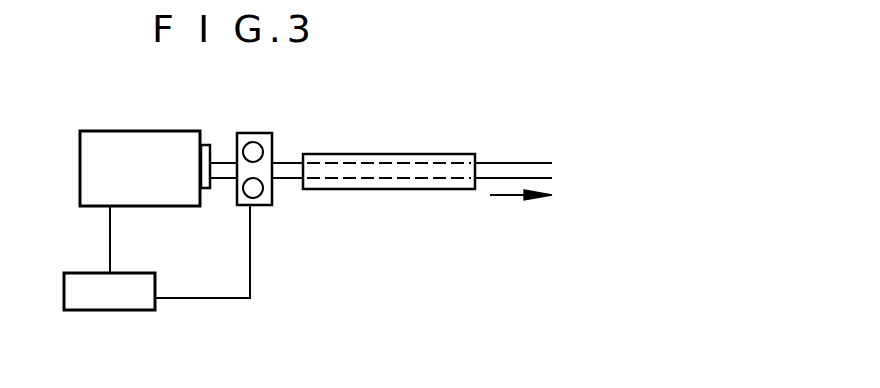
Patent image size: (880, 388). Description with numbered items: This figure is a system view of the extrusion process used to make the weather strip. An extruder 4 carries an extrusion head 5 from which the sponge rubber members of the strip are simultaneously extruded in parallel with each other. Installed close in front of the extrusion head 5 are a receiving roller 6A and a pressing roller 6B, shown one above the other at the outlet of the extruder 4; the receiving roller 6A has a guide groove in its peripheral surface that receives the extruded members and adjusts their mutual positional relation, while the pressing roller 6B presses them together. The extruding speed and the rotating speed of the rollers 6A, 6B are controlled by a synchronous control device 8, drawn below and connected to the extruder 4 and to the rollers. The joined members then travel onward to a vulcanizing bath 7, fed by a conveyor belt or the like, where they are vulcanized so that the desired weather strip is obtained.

The extruder 4 is at (143, 141).
The extrusion head 5 is at (207, 142).
The receiving roller 6A is at (258, 206).
The pressing roller 6B is at (260, 143).
The vulcanizing bath 7 is at (385, 153).
The synchronous control device 8 is at (117, 297).